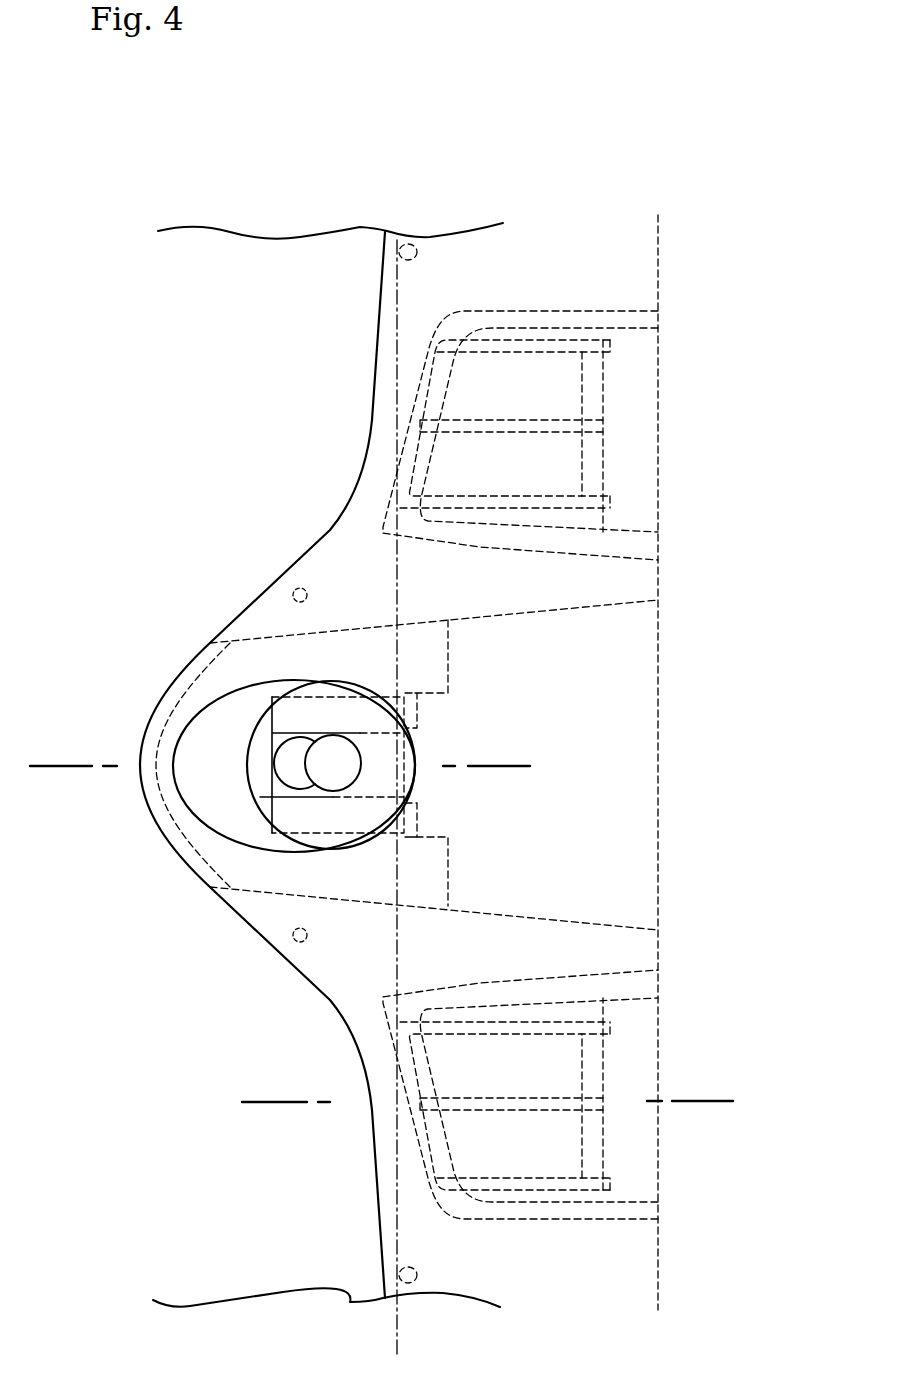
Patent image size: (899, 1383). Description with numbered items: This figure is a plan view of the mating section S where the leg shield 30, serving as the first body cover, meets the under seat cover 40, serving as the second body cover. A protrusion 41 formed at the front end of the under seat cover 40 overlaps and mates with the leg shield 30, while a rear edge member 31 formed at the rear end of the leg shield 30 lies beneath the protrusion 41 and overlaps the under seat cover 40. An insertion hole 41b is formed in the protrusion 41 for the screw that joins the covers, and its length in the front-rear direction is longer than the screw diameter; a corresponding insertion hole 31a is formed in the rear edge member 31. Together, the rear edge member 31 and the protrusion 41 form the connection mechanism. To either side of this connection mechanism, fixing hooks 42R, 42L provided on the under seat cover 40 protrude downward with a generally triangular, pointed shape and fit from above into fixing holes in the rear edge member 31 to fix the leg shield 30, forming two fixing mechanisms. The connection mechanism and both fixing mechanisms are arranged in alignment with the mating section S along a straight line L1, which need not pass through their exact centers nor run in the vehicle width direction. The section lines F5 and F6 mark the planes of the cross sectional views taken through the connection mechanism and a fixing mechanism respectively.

The mating section S is at (384, 186).
The leg shield 30 is at (290, 262).
The under seat cover 40 is at (467, 262).
The protrusion 41 is at (203, 693).
The insertion hole 41b is at (292, 760).
The rear edge member 31 is at (583, 608).
The insertion hole 31a is at (348, 758).
The fixing hook 42R is at (605, 393).
The fixing hook 42L is at (602, 1050).
The straight line L1 is at (397, 1340).
The section line F5- F5 is at (516, 770).
The section line F6- F6 is at (722, 1105).